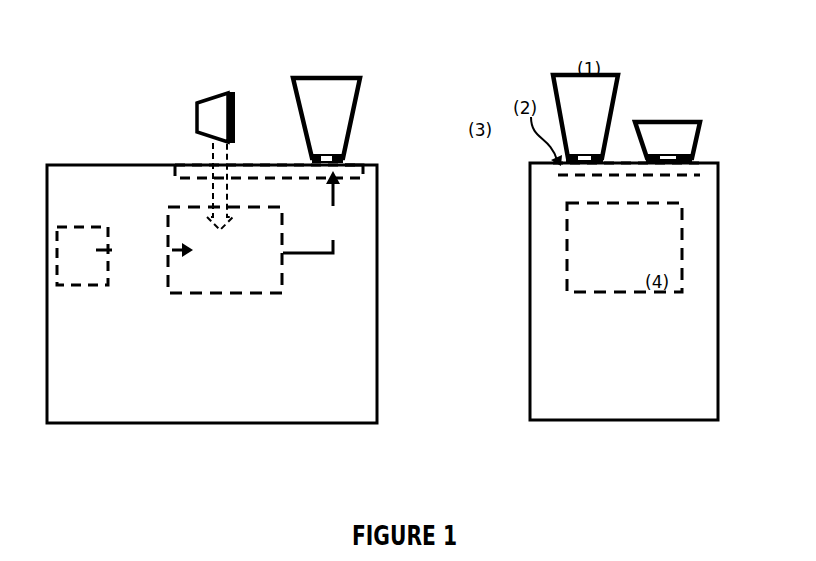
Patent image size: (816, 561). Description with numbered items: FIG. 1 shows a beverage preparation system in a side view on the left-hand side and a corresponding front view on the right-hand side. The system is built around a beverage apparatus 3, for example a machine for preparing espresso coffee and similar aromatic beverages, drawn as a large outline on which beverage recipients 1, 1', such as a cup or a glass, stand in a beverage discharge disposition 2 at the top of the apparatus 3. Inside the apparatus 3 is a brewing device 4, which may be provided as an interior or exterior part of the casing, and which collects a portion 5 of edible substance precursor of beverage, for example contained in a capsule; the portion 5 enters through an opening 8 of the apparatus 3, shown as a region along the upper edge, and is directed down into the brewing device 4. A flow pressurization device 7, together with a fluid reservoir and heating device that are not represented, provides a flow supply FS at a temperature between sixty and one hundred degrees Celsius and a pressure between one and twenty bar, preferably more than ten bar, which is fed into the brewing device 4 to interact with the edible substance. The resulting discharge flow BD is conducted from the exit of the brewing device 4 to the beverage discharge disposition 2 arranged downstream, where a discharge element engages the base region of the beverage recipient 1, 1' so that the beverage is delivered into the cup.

The beverage recipient 1 is at (326, 111).
The beverage recipient 1' is at (667, 132).
The beverage discharge disposition 2 is at (356, 160).
The beverage apparatus 3 is at (212, 270).
The brewing device 4 is at (225, 250).
The portion of edible substance 5 is at (216, 149).
The flow pressurization device 7 is at (84, 243).
The opening 8 is at (269, 158).
The flow supply FS is at (157, 253).
The discharge flow BD is at (317, 212).